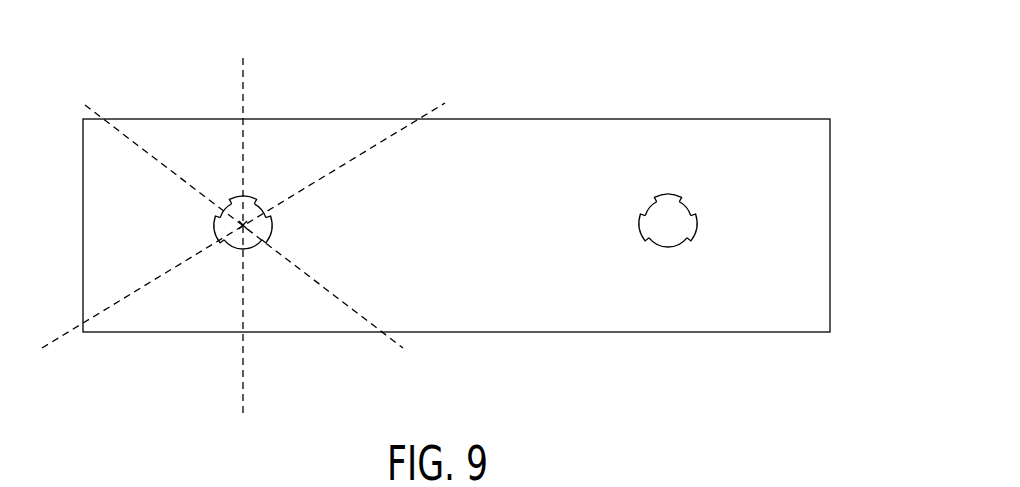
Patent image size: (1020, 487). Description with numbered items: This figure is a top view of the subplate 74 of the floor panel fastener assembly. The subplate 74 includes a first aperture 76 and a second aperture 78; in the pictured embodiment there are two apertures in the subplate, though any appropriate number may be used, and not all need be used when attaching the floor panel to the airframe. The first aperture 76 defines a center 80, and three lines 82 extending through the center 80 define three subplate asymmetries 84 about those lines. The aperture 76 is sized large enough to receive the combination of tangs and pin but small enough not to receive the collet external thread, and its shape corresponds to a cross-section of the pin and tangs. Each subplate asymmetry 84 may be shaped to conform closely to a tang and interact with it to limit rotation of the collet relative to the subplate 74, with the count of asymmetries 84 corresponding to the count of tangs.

The subplate 74 is at (642, 90).
The first aperture 76 is at (222, 253).
The second aperture 78 is at (667, 236).
The center 80 is at (250, 229).
The lines 82 is at (96, 113).
The subplate asymmetries 84 is at (257, 198).